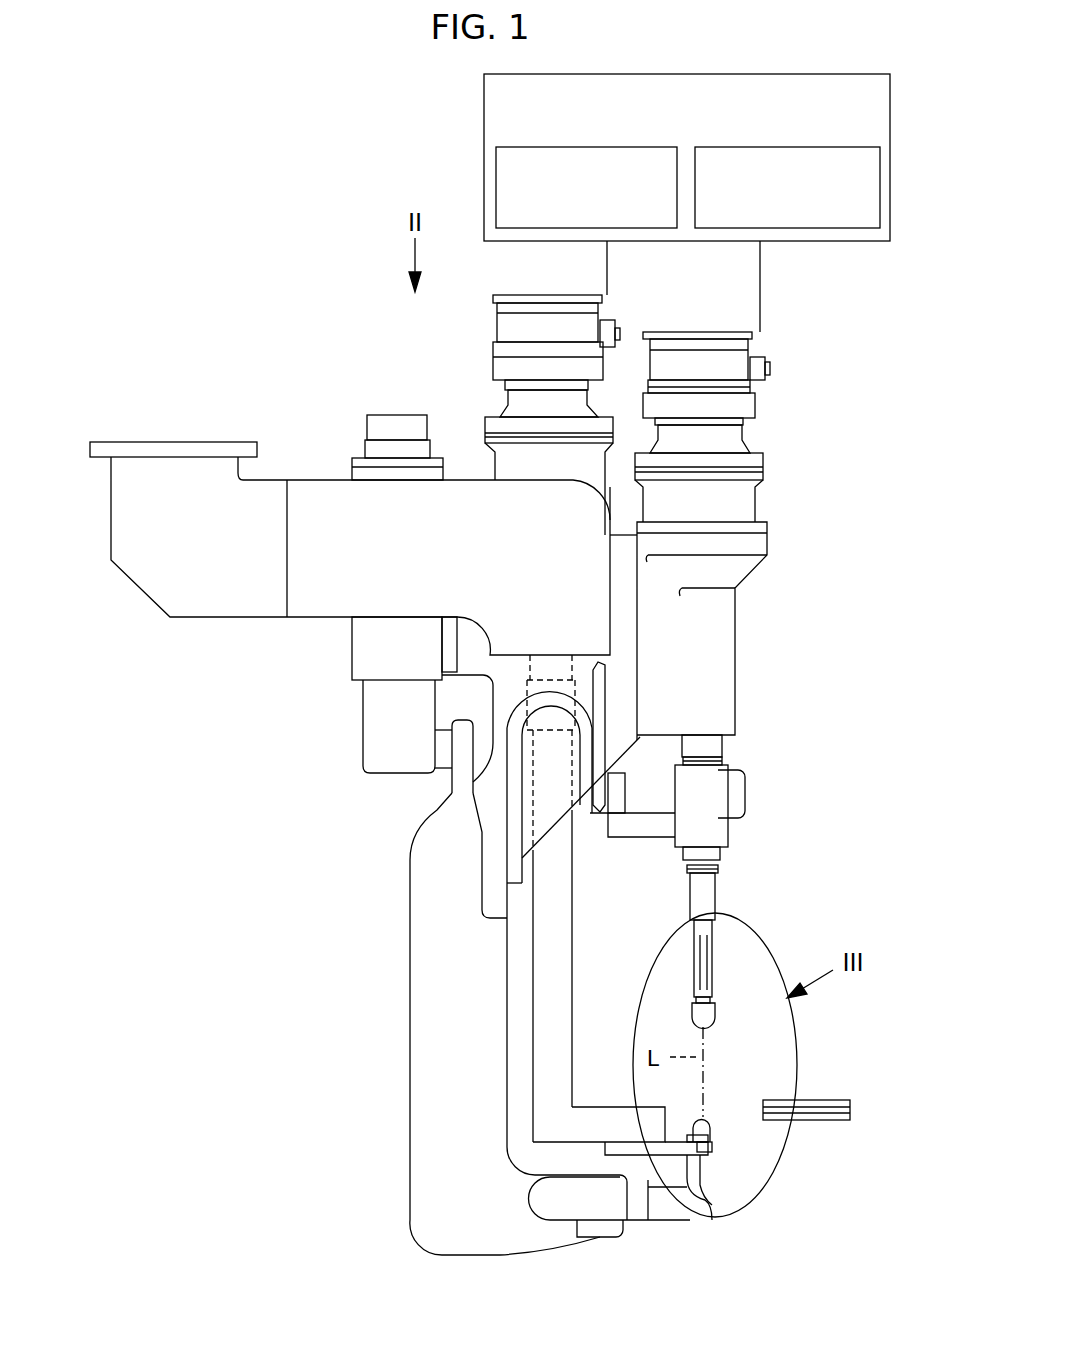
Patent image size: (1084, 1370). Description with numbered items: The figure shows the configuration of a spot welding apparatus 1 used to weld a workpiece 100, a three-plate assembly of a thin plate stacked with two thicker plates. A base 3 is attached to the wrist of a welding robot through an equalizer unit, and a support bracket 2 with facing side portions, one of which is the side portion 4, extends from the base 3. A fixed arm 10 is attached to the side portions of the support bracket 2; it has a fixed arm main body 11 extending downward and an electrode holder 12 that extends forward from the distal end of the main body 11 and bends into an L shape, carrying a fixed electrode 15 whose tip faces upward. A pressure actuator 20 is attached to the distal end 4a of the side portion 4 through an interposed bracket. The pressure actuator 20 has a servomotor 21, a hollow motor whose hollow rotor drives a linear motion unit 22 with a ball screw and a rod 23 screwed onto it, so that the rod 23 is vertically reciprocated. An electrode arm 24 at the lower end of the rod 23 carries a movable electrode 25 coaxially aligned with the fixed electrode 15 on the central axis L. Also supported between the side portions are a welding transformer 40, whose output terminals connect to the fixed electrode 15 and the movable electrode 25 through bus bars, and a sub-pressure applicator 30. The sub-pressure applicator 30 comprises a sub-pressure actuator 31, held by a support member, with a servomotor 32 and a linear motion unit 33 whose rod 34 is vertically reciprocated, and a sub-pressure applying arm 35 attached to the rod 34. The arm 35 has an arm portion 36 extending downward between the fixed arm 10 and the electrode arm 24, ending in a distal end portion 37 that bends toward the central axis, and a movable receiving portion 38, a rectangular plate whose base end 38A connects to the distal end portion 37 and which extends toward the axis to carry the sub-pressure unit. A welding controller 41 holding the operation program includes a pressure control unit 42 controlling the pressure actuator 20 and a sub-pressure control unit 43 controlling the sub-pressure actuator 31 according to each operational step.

The spot welding apparatus 1 is at (235, 861).
The support bracket 2 is at (277, 478).
The base 3 is at (247, 440).
The side portion 4 is at (303, 597).
The distal end 4a is at (600, 643).
The fixed arm 10 is at (460, 1043).
The fixed arm main body 11 is at (417, 983).
The electrode holder 12 is at (560, 1212).
The fixed electrode 15 is at (713, 1150).
The pressure actuator 20 is at (766, 427).
The servomotor 21 is at (757, 397).
The linear motion unit 22 is at (762, 510).
The rod 23 is at (715, 748).
The electrode arm 24 is at (712, 895).
The movable electrode 25 is at (715, 1010).
The sub-pressure applicator 30 is at (456, 442).
The sub-pressure actuator 31 is at (501, 377).
The servomotor 32 is at (507, 327).
The linear motion unit 33 is at (497, 460).
The rod 34 is at (548, 672).
The sub-pressure applying arm 35 is at (532, 1012).
The arm portion 36 is at (545, 1042).
The distal end portion 37 is at (590, 1118).
The movable receiving portion 38 is at (668, 1150).
The base end 38A is at (633, 1153).
The welding transformer 40 is at (360, 450).
The welding controller 41 is at (830, 74).
The pressure control unit 42 is at (835, 147).
The sub-pressure control unit 43 is at (632, 147).
The workpiece 100 is at (847, 1100).